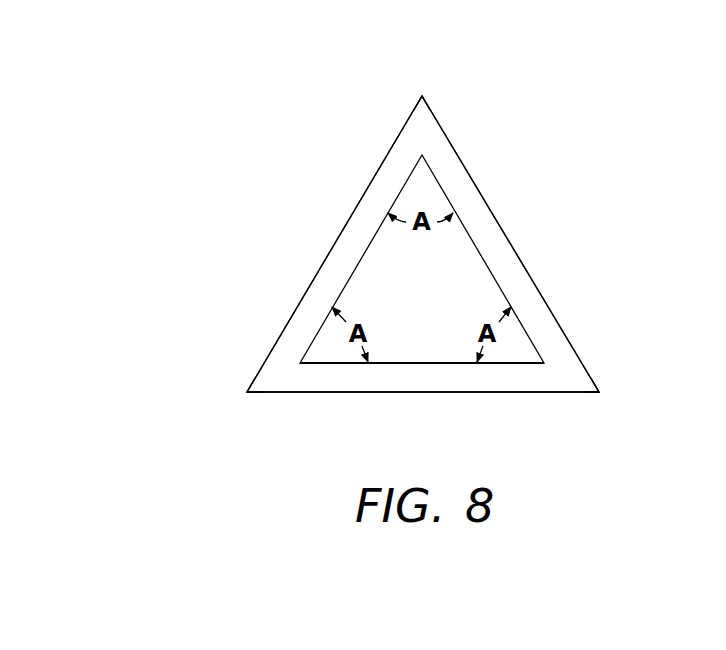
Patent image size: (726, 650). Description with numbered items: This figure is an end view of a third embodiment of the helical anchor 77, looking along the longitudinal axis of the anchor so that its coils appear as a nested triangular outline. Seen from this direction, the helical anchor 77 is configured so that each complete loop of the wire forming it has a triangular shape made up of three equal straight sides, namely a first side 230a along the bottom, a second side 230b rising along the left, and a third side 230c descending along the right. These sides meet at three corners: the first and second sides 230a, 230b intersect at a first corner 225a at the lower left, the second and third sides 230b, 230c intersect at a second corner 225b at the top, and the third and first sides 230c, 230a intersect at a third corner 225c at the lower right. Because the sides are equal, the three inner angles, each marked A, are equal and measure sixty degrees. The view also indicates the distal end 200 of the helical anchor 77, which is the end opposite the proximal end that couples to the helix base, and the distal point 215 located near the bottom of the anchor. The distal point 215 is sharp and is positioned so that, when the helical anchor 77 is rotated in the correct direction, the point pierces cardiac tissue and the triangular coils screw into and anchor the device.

The helical anchor 77 is at (303, 132).
The distal end 200 is at (279, 222).
The distal point 215 is at (368, 363).
The first corner 225a is at (247, 392).
The second corner 225b is at (422, 96).
The third corner 225c is at (599, 392).
The first side 230a is at (333, 392).
The second side 230b is at (335, 243).
The third side 230c is at (510, 243).